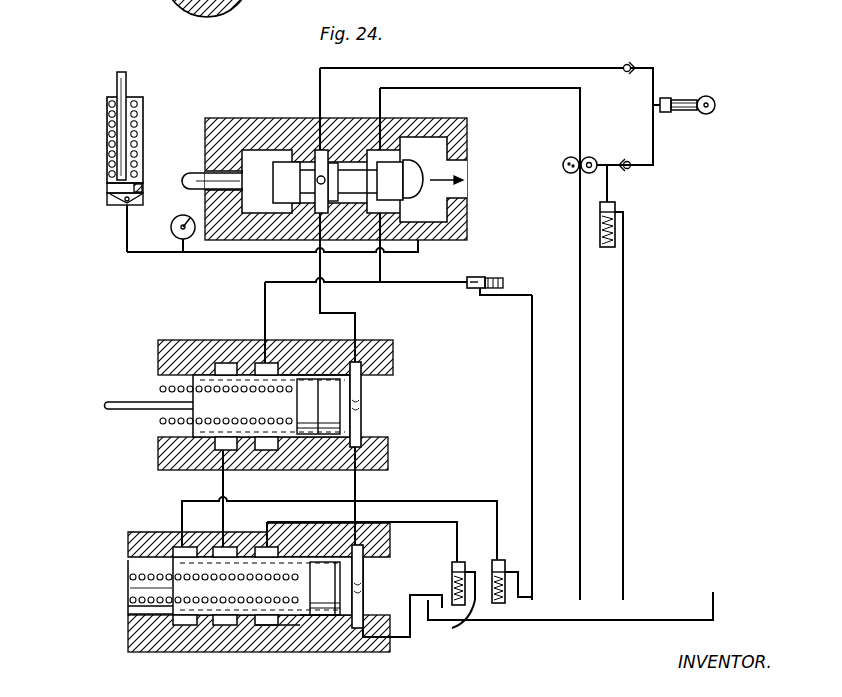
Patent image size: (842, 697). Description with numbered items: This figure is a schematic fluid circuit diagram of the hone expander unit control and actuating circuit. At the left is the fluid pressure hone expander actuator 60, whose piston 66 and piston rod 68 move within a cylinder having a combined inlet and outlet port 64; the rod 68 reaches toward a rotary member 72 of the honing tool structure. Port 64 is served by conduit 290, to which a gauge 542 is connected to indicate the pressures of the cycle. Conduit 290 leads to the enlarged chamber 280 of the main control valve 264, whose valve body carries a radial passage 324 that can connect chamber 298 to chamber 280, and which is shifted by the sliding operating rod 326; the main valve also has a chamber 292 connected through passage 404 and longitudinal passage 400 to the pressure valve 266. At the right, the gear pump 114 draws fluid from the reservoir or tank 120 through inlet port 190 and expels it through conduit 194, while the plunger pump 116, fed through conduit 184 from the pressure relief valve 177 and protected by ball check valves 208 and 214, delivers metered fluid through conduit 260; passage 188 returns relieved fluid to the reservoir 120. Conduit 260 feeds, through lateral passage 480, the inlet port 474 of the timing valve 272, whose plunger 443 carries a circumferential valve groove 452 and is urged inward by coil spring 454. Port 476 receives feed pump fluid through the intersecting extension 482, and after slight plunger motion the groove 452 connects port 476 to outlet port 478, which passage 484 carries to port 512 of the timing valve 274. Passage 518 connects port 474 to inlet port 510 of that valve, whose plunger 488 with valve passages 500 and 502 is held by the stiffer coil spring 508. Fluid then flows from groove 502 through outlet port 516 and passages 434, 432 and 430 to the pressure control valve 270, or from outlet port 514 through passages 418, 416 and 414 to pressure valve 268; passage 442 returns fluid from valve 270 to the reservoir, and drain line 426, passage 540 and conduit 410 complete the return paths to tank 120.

The rotary member 72 is at (160, 0).
The fluid pressure hone expander actuator 60 is at (146, 108).
The piston rod 68 is at (125, 82).
The piston 66 is at (106, 188).
The combined inlet and outlet port 64 is at (118, 206).
The gauge 542 is at (174, 218).
The main control valve 264 is at (202, 123).
The valve stem or operating rod 326 is at (205, 175).
The chamber 298 is at (318, 176).
The radial passage 324 is at (323, 152).
The chamber 292 is at (393, 150).
The enlarged chamber 280 is at (437, 137).
The conduit 260 is at (518, 67).
The ball check valve 214 is at (620, 62).
The plunger or piston pump 116 is at (678, 92).
The conduit 194 is at (580, 124).
The conduit 184 is at (600, 164).
The gear pump 114 is at (562, 178).
The ball check valve 208 is at (634, 170).
The pressure relief valve 177 is at (618, 206).
The inlet port 190 is at (580, 260).
The opening or passage 188 is at (625, 278).
The conduit 290 is at (207, 257).
The passage 404 is at (382, 267).
The pressure valve 266 is at (476, 277).
The longitudinal passage 400 is at (437, 285).
The lateral passage 480 is at (322, 300).
The intersecting extension 482 is at (265, 305).
The outlet port or chamber 478 is at (223, 363).
The port or chamber 476 is at (271, 362).
The circumferential valve groove 452 is at (372, 341).
The valve body or plunger 443 is at (335, 366).
The inlet port or chamber 474 is at (363, 376).
The fluid conduit 410 is at (531, 358).
The timing valve 272 is at (153, 387).
The coil spring 454 is at (158, 417).
The lateral passage 518 is at (370, 472).
The passage 484 is at (220, 477).
The lateral passage 418 is at (271, 521).
The valve body or plunger 488 is at (330, 521).
The passage 432 is at (396, 500).
The passage 430 is at (499, 500).
The passage 414 is at (460, 522).
The passage 434 is at (180, 512).
The valve passage 502 is at (193, 547).
The port 512 is at (231, 547).
The outlet port or chamber 514 is at (304, 560).
The passage 416 is at (405, 556).
The inlet port or chamber 510 is at (364, 551).
The timing valve 274 is at (128, 555).
The outlet port or chamber 516 is at (173, 564).
The coil spring 508 is at (127, 606).
The pressure control valve 270 is at (492, 562).
The pressure valve 268 is at (451, 574).
The passage 442 is at (520, 596).
The drain conduit 426 is at (464, 623).
The valve passage 540 is at (265, 617).
The valve passage 500 is at (325, 612).
The reservoir or tank 120 is at (665, 608).